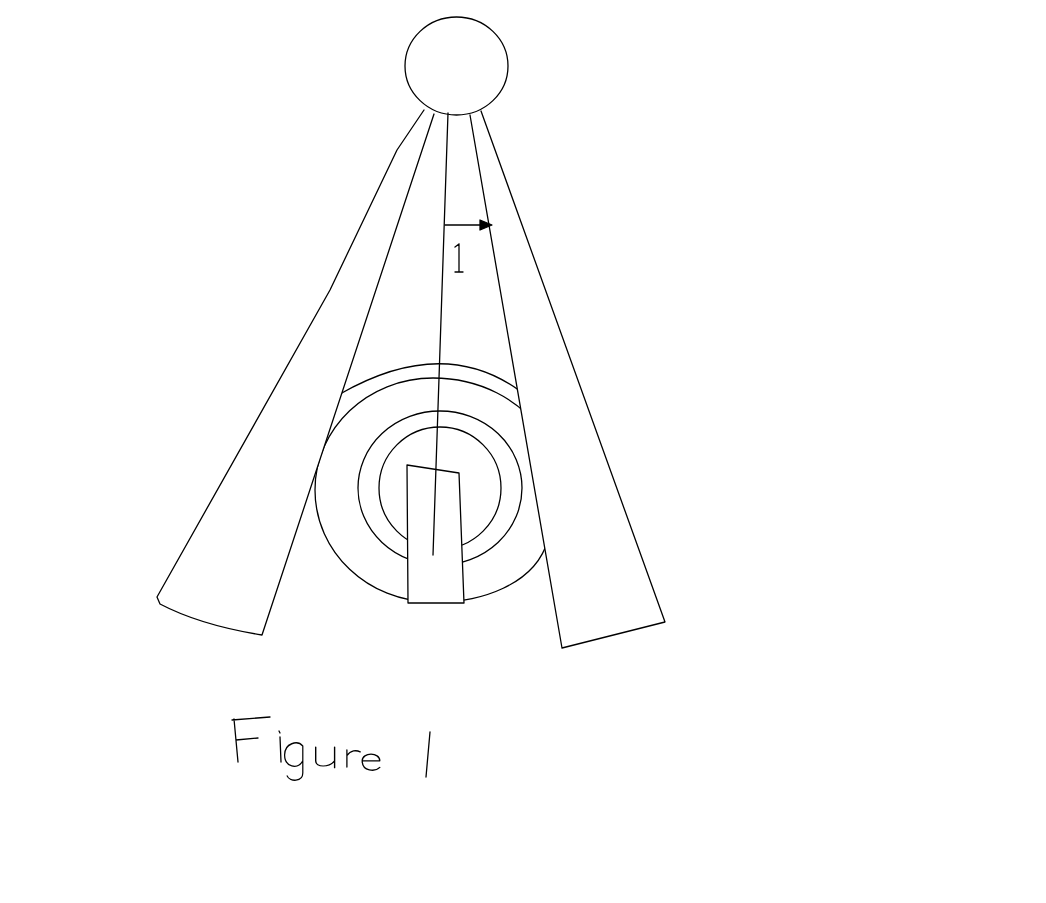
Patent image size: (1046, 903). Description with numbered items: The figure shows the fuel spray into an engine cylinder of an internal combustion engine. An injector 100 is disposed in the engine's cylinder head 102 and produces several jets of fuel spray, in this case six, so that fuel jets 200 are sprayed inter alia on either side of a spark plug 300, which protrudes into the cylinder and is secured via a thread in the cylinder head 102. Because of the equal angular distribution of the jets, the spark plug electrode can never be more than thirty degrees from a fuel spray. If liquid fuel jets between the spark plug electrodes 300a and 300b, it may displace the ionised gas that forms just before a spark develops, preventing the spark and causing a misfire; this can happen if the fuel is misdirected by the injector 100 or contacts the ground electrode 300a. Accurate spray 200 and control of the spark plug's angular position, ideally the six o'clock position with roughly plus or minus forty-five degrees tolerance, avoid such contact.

The injector 100 is at (510, 58).
The cylinder head 102 is at (580, 334).
The fuel jets 200 is at (687, 373).
The spark plug 300 is at (579, 486).
The spark plug ground electrode 300a is at (612, 702).
The spark plug electrode 300b is at (707, 487).